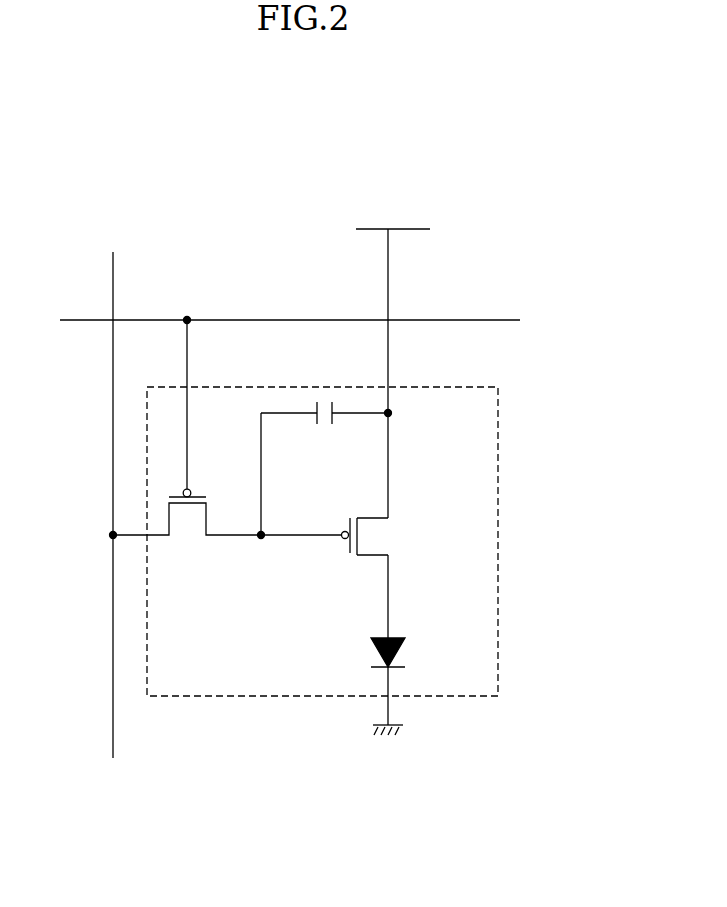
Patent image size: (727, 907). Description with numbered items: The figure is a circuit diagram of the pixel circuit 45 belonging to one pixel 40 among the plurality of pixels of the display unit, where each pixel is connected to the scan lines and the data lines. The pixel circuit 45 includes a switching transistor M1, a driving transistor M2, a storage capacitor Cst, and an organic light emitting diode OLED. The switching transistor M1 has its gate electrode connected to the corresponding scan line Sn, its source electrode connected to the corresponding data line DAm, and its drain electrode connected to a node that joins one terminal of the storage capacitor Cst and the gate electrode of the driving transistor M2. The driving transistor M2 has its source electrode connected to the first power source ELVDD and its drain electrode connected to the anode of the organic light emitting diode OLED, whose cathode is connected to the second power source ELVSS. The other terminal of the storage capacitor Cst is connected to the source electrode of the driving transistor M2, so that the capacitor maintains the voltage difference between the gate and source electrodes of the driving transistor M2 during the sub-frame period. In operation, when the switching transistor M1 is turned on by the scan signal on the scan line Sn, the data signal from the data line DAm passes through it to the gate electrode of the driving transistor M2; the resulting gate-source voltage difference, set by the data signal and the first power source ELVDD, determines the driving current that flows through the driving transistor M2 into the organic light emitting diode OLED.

The pixel 40 is at (268, 200).
The pixel circuit 45 is at (498, 490).
The data line DAm is at (128, 490).
The scan line Sn is at (274, 318).
The first power source ELVDD is at (393, 359).
The second power source ELVSS is at (397, 748).
The switching transistor M1 is at (187, 445).
The driving transistor M2 is at (343, 578).
The storage capacitor Cst is at (324, 468).
The organic light emitting diode OLED is at (423, 681).